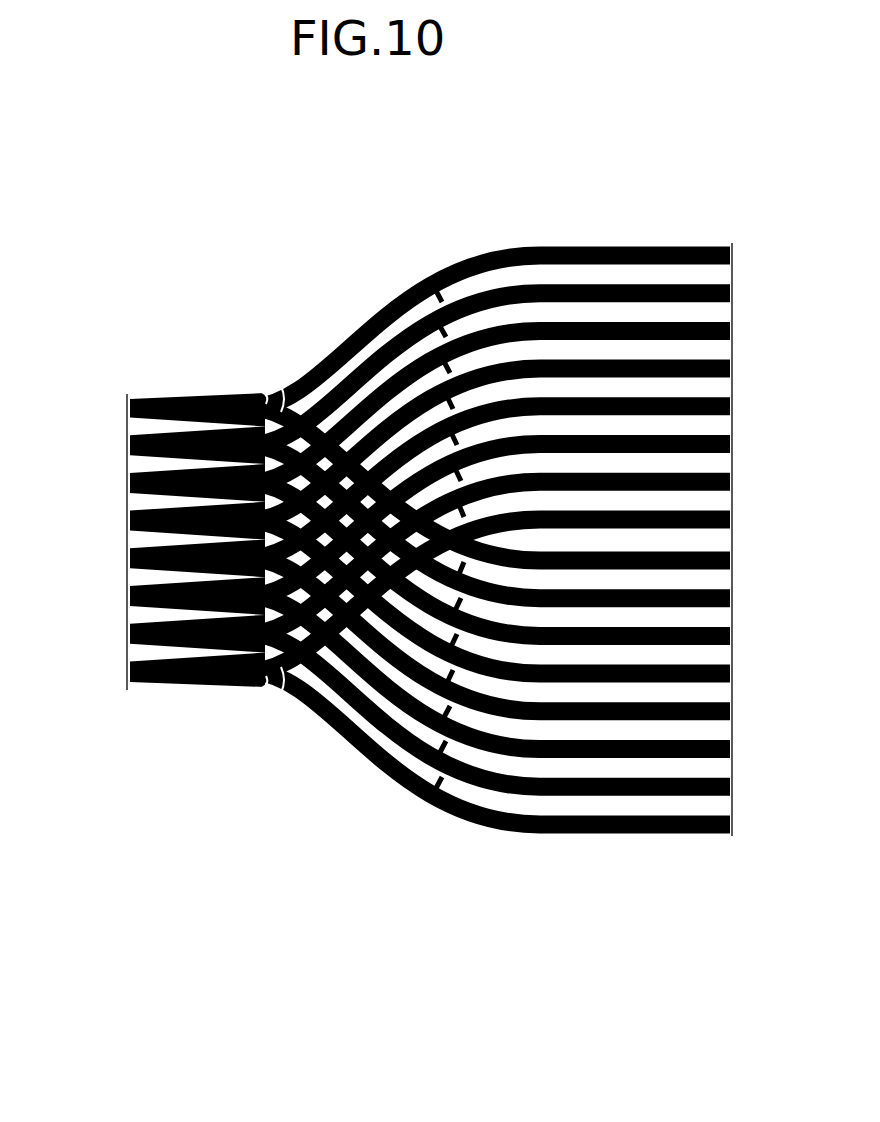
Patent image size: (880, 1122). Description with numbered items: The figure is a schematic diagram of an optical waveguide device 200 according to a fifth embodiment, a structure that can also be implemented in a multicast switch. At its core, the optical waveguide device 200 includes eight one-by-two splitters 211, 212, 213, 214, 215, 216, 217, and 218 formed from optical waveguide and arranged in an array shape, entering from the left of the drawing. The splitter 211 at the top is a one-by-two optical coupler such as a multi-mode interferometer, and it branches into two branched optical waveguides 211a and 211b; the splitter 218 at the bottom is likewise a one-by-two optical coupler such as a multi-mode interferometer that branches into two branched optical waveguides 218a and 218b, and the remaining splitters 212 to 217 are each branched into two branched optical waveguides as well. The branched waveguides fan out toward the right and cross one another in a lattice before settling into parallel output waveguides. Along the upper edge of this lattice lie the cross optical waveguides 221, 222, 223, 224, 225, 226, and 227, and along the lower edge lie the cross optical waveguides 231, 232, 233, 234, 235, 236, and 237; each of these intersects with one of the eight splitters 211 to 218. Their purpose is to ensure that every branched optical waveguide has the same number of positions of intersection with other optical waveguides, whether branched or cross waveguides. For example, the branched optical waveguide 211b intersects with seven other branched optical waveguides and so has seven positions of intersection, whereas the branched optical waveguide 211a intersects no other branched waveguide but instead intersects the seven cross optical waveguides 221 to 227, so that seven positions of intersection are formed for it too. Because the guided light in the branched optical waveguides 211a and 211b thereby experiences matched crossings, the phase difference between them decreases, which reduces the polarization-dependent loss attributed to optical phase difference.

The optical waveguide device 200 is at (116, 266).
The 1×2 splitter 211 is at (151, 392).
The branched optical waveguide 211a is at (266, 392).
The branched optical waveguide 211b is at (283, 398).
The 1×2 splitter 212 is at (146, 438).
The 1×2 splitter 213 is at (146, 475).
The 1×2 splitter 214 is at (146, 513).
The 1×2 splitter 215 is at (146, 550).
The 1×2 splitter 216 is at (146, 588).
The 1×2 splitter 217 is at (146, 624).
The 1×2 splitter 218 is at (146, 661).
The branched optical waveguide 218a is at (283, 672).
The branched optical waveguide 218b is at (266, 688).
The cross optical waveguide 221 is at (290, 396).
The cross optical waveguide 222 is at (315, 379).
The cross optical waveguide 223 is at (333, 364).
The cross optical waveguide 224 is at (353, 346).
The cross optical waveguide 225 is at (370, 331).
The cross optical waveguide 226 is at (393, 312).
The cross optical waveguide 227 is at (413, 298).
The cross optical waveguide 231 is at (293, 685).
The cross optical waveguide 232 is at (313, 699).
The cross optical waveguide 233 is at (332, 715).
The cross optical waveguide 234 is at (353, 733).
The cross optical waveguide 235 is at (373, 751).
The cross optical waveguide 236 is at (390, 765).
The cross optical waveguide 237 is at (413, 781).